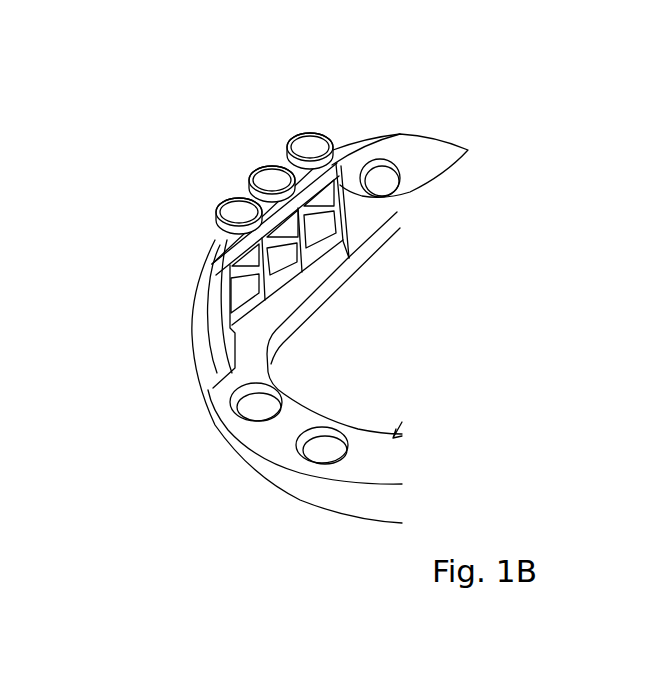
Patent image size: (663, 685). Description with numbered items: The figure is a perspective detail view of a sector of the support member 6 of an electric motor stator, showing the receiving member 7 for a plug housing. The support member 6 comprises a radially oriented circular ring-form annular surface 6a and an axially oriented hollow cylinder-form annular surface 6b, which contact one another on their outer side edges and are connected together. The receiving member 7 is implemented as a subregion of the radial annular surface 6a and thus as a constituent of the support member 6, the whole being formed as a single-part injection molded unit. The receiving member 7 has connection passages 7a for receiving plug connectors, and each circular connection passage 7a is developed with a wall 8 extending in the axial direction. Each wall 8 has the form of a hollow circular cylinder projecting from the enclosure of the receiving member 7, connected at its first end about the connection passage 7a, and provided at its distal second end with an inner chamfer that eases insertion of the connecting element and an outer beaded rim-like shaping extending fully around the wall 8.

The support member 6 is at (279, 281).
The radially oriented circular ring-form annular surface 6a is at (283, 432).
The axially oriented hollow cylinder-form annular surface 6b is at (283, 465).
The receiving member 7 is at (277, 192).
The connection passage 7a is at (307, 150).
The wall 8 is at (228, 232).